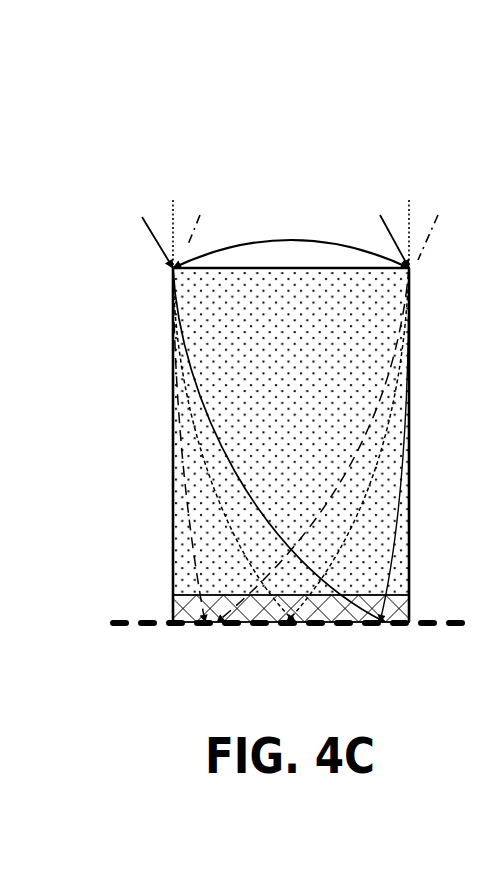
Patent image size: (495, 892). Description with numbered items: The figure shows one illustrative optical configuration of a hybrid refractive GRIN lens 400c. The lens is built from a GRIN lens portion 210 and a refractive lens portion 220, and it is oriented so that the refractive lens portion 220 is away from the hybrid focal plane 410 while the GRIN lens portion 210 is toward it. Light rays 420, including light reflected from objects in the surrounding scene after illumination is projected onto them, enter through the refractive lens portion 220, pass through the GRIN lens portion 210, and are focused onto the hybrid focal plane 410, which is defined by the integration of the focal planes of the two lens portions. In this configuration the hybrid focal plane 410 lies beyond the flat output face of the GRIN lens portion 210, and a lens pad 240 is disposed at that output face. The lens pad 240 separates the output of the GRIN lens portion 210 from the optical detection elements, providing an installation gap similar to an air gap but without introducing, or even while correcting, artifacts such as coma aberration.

The hybrid refractive GRIN lens 400c is at (171, 146).
The GRIN lens portion 210 is at (220, 347).
The refractive lens portion 220 is at (302, 253).
The lens pad 240 is at (408, 618).
The hybrid focal plane 410 is at (142, 628).
The light rays 420 is at (150, 230).